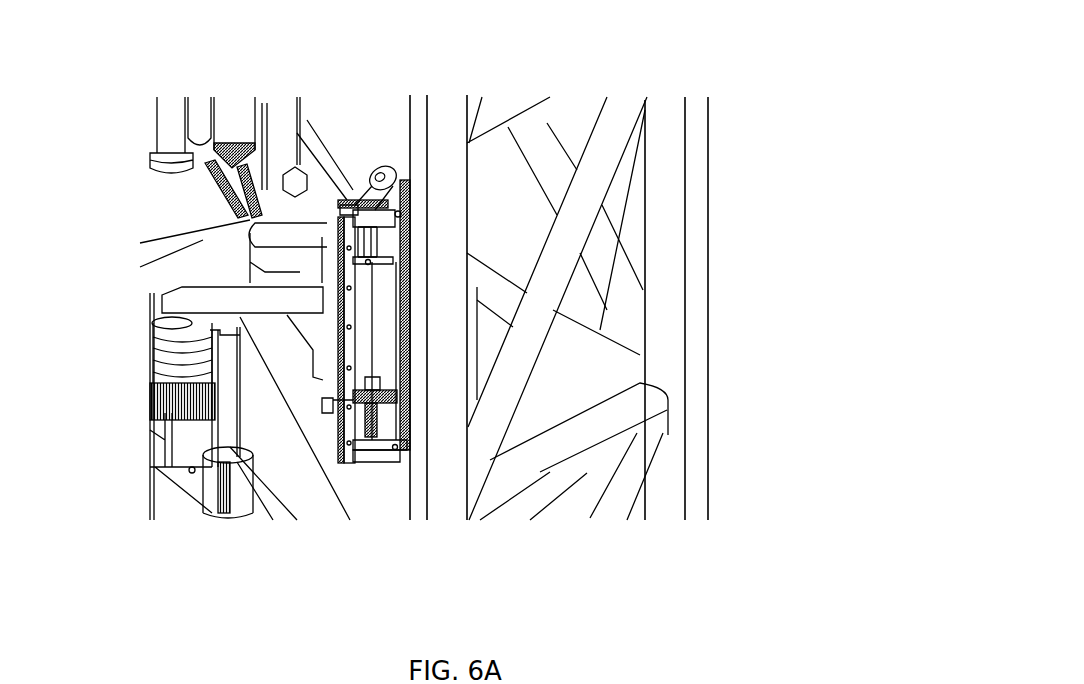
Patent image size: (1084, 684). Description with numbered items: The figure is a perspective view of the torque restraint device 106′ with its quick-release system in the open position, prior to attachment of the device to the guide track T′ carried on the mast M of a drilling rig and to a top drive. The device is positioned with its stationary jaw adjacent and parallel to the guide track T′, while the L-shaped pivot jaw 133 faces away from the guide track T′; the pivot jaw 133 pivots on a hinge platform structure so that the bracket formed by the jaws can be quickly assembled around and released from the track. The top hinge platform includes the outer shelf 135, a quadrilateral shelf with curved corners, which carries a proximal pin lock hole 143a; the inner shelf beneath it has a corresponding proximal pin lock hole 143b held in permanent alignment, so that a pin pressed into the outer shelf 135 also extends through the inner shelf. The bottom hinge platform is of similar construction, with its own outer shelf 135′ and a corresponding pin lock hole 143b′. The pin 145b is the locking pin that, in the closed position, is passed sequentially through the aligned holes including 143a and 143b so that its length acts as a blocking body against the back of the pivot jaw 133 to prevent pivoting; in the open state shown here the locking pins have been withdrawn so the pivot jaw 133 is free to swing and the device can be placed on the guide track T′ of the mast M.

The proximal pin lock hole 143a is at (400, 213).
The outer shelf 135 is at (393, 197).
The mast M is at (680, 188).
The pin 145b is at (353, 206).
The proximal pin lock hole 143b is at (365, 262).
The guide track T′ is at (420, 378).
The pivot jaw 133 is at (340, 398).
The proximal pin lock hole 143b′ is at (400, 447).
The outer shelf 135′ is at (357, 462).
The torque restraint device 106′ is at (388, 470).